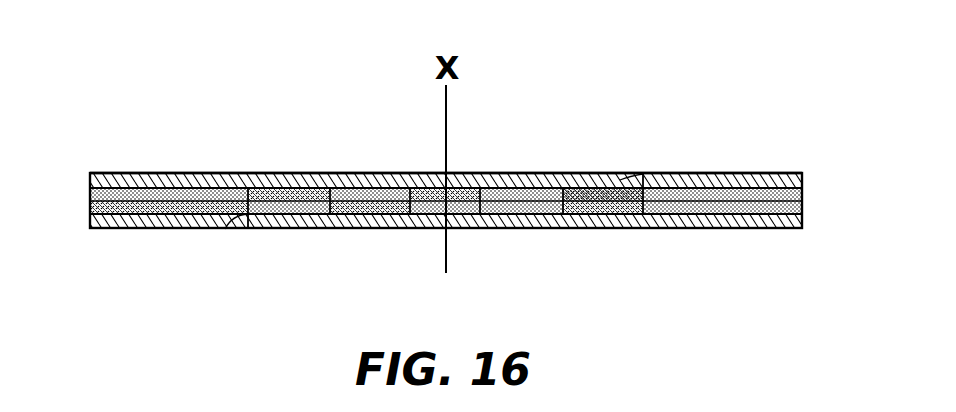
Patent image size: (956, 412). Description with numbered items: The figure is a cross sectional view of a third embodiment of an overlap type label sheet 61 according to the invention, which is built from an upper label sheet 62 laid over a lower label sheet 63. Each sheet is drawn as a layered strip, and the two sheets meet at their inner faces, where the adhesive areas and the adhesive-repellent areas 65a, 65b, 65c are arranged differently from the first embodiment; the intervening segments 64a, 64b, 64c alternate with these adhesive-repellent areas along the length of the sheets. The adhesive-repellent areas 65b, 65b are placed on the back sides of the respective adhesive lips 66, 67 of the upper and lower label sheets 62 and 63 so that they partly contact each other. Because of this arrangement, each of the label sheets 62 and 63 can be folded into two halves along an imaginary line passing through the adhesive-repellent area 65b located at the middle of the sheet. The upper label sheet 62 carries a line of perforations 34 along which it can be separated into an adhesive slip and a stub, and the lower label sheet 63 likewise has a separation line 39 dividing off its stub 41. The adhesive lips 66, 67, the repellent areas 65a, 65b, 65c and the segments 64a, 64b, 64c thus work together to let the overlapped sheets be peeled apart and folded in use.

The overlap type label sheet 61 is at (698, 92).
The upper label sheet 62 is at (772, 173).
The lower label sheet 63 is at (775, 228).
The adhesive lip 66 is at (204, 182).
The line of perforations 34 is at (620, 180).
The seam in bottom layer 39 is at (225, 229).
The stub 41 is at (187, 228).
The adhesive lip 67 is at (678, 228).
The first material segment 64a is at (119, 193).
The first material segment 64b is at (527, 210).
The first material segment 64c is at (586, 181).
The adhesive-repellent area 65a is at (305, 196).
The adhesive-repellent area 65b is at (481, 178).
The adhesive-repellent area 65c is at (679, 177).